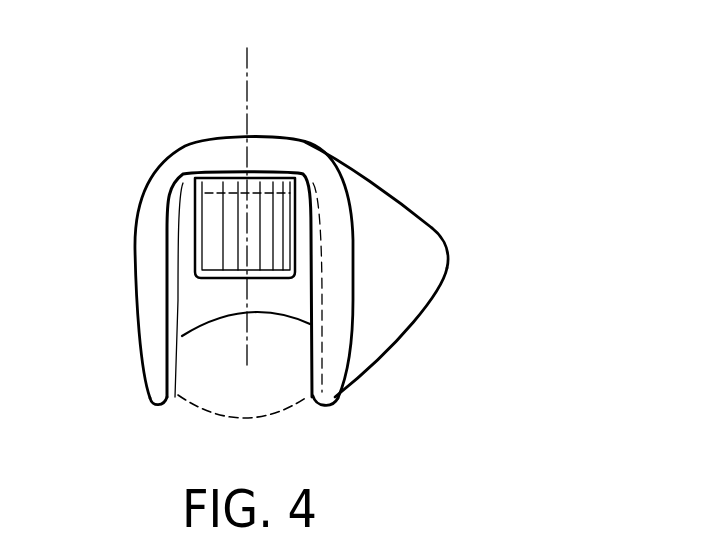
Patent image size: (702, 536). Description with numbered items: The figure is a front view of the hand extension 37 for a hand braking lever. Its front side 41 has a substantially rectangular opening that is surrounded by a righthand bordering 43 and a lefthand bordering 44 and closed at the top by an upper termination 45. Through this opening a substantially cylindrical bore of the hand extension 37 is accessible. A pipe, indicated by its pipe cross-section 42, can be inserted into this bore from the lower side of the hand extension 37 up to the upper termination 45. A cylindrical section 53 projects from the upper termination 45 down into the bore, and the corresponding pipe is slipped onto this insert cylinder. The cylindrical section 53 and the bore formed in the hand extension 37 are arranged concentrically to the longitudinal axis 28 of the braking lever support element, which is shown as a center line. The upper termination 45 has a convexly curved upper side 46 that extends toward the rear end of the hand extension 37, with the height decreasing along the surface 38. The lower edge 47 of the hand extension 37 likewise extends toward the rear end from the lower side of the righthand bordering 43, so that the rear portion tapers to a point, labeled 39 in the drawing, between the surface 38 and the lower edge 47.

The longitudinal axis 28 is at (248, 62).
The hand extension 37 is at (317, 252).
The surface 38 is at (377, 190).
The wing tip 39 is at (452, 253).
The front side 41 is at (187, 410).
The pipe cross-section 42 is at (283, 414).
The righthand bordering 43 is at (333, 300).
The lefthand bordering 44 is at (148, 305).
The upper termination 45 is at (227, 150).
The upper side 46 is at (282, 130).
The lower edge 47 is at (384, 363).
The cylindrical section 53 is at (223, 226).